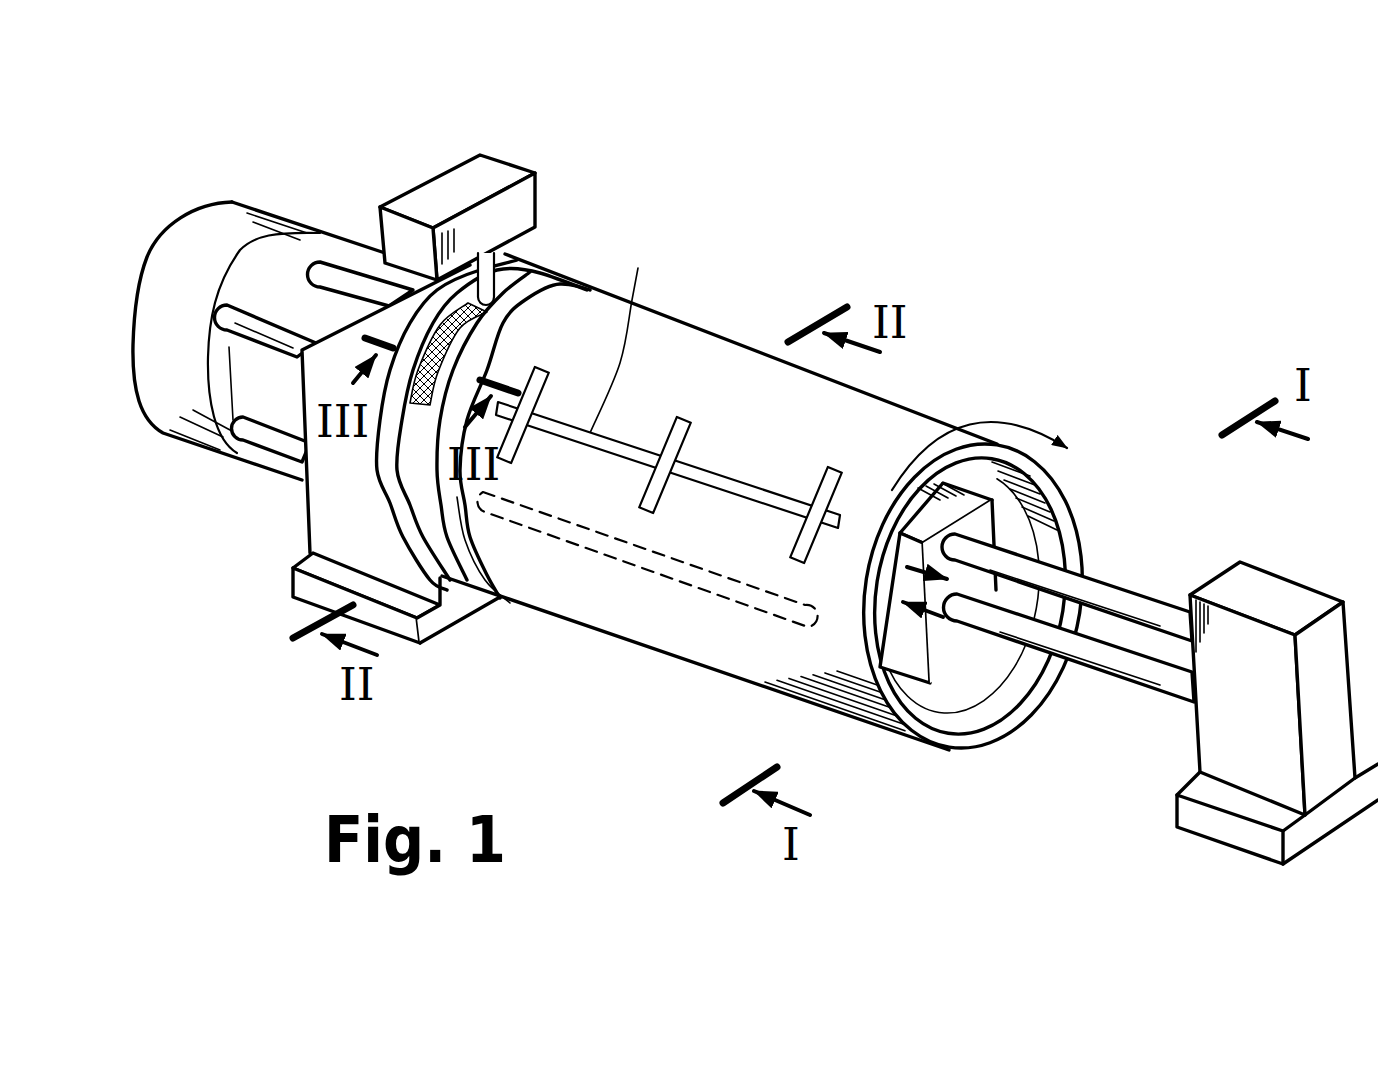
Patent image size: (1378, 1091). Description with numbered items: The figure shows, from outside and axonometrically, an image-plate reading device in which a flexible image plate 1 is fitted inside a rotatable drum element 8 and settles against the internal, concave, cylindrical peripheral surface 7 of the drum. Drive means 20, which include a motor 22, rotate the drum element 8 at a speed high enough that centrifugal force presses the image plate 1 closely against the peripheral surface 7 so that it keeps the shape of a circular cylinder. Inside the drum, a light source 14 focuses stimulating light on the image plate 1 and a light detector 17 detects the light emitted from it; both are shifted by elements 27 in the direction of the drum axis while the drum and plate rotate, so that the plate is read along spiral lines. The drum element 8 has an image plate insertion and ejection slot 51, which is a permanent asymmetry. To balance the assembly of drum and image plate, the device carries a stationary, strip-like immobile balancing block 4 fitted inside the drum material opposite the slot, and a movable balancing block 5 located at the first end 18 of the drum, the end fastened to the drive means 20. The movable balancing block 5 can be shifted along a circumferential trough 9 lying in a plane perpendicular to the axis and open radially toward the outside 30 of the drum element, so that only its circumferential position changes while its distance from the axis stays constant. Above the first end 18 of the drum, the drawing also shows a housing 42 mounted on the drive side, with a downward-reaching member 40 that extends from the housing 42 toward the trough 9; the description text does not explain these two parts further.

The image plate 1 is at (943, 690).
The immobile balancing block 4 is at (677, 573).
The movable balancing block 5 is at (470, 338).
The peripheral surface 7 is at (1045, 527).
The drum element 8 is at (719, 494).
The trough 9 is at (410, 507).
The light source 14 is at (952, 636).
The light detector 17 is at (1053, 740).
The first end 18 is at (592, 236).
The drive means 20 is at (340, 514).
The motor 22 is at (200, 306).
The elements 27 is at (1152, 580).
The outside 30 is at (708, 445).
The sensor pin 40 is at (500, 268).
The sensor housing 42 is at (468, 172).
The image plate insertion and ejection slot 51 is at (633, 338).